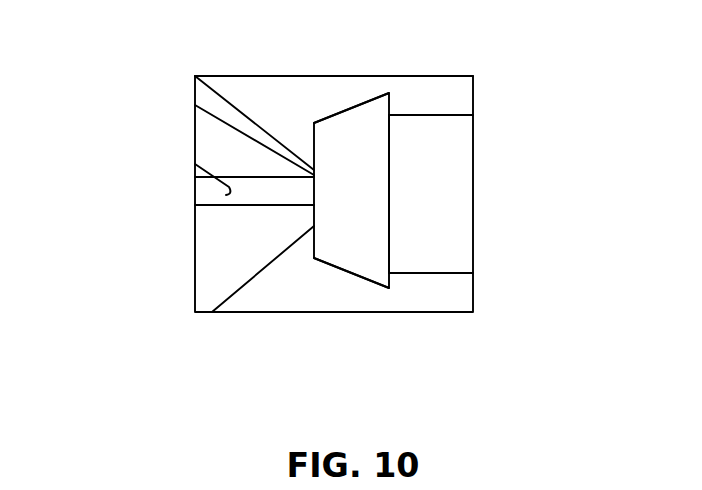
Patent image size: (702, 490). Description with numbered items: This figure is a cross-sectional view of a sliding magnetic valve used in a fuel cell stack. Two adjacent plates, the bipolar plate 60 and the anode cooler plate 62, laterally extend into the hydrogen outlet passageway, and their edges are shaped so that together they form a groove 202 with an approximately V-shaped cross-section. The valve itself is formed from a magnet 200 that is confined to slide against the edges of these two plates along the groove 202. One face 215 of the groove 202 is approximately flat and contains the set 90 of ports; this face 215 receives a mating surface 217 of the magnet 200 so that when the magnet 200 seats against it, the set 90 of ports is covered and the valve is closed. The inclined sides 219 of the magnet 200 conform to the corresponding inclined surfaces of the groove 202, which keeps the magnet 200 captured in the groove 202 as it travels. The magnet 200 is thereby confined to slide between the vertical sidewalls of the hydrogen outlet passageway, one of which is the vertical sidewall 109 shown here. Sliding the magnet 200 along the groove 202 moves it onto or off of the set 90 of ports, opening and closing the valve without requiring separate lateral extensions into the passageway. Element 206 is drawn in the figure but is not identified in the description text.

The bipolar plate 60 is at (324, 230).
The anode cooler plate 62 is at (330, 55).
The set of ports 90 is at (207, 166).
The vertical sidewall 109 is at (490, 185).
The magnet 200 is at (420, 236).
The groove 202 is at (211, 288).
The spacer 206 is at (498, 190).
The face 215 is at (197, 104).
The mating surface 217 is at (195, 122).
The inclined sides 219 is at (363, 215).